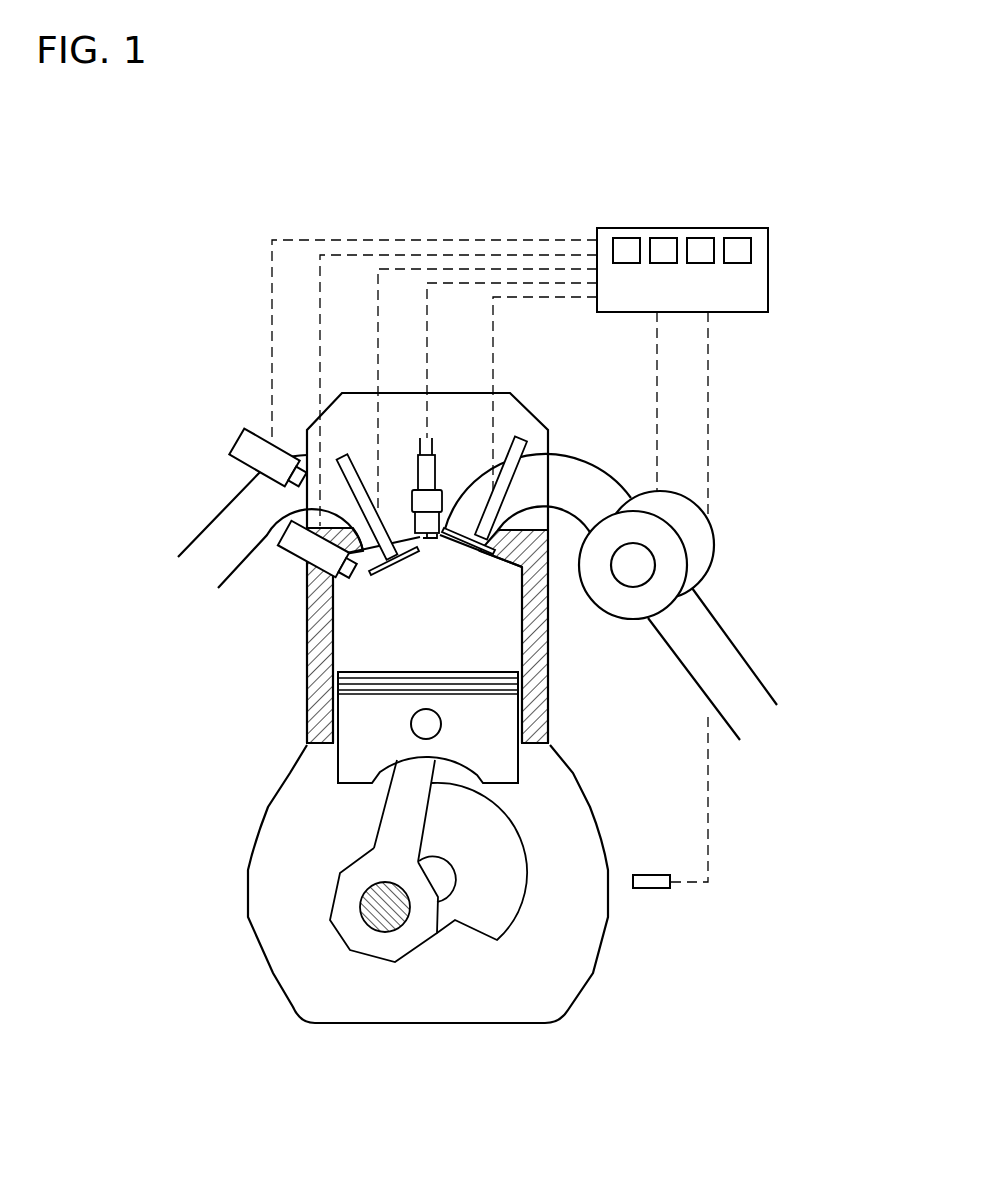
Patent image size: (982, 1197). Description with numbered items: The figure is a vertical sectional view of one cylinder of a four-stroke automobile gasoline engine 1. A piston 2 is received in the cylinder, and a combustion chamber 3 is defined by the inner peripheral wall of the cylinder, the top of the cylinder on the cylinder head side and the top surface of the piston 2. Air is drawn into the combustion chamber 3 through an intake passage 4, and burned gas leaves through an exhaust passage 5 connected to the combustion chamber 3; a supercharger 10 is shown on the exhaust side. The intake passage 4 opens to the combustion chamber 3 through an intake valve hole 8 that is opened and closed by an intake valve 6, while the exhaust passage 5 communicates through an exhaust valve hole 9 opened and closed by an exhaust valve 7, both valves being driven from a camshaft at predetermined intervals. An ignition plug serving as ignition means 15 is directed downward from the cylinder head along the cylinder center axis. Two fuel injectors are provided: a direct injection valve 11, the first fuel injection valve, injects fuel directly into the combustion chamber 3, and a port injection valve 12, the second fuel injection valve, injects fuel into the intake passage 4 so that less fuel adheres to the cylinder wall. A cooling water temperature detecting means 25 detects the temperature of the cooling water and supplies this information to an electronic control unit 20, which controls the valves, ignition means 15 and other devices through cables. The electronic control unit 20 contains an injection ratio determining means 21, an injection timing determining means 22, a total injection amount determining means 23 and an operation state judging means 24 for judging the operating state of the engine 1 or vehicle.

The engine 1 is at (551, 621).
The piston 2 is at (357, 755).
The combustion chamber 3 is at (418, 637).
The intake passage 4 is at (222, 533).
The exhaust passage 5 is at (577, 477).
The intake valve 6 is at (365, 465).
The exhaust valve 7 is at (508, 455).
The intake valve hole 8 is at (306, 672).
The exhaust valve hole 9 is at (475, 557).
The supercharger 10 is at (710, 553).
The direct injection valve 11 is at (300, 556).
The port injection valve 12 is at (243, 428).
The ignition means 15 is at (432, 472).
The electronic control unit 20 is at (770, 239).
The injection ratio determining means 21 is at (623, 240).
The injection timing determining means 22 is at (662, 242).
The total injection amount determining means 23 is at (703, 242).
The operation state judging means 24 is at (733, 242).
The cooling water temperature detecting means 25 is at (647, 889).